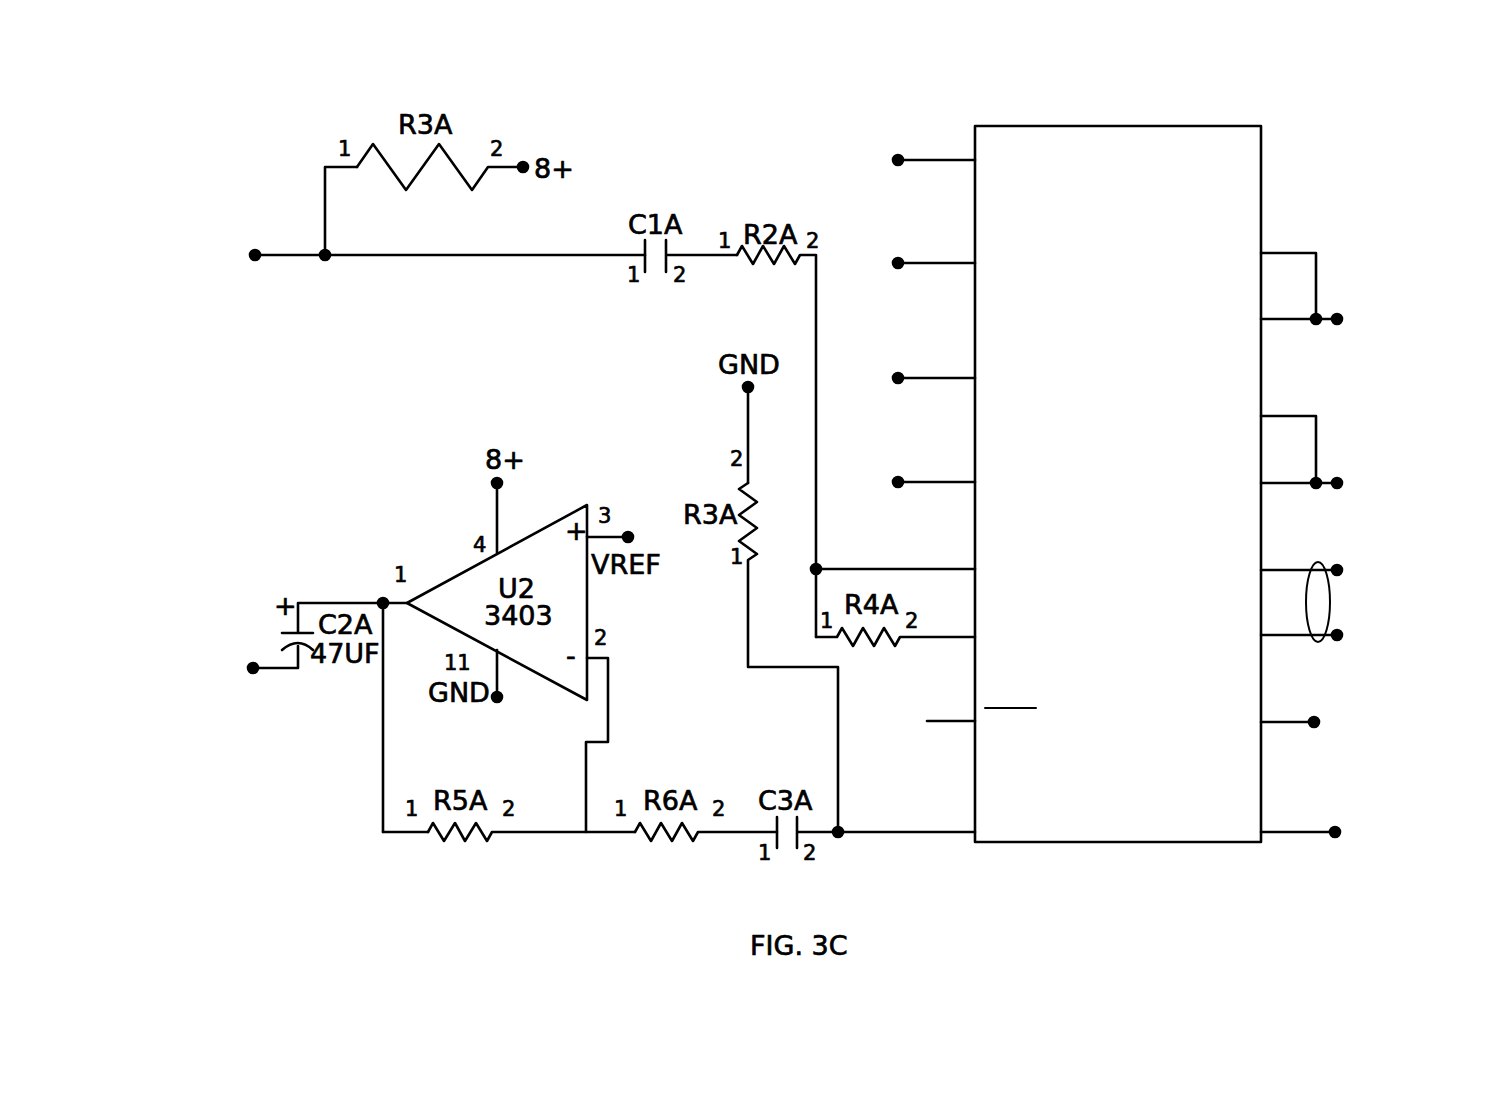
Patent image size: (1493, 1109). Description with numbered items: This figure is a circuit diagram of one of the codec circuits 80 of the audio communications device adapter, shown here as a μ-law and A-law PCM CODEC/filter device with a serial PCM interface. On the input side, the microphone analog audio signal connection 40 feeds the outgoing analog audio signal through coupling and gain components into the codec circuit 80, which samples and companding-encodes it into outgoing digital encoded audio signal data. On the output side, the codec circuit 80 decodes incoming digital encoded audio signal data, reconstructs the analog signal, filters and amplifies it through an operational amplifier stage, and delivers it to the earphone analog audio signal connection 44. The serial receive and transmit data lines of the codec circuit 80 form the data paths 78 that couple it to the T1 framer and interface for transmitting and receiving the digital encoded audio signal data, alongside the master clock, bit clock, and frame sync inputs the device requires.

The microphone analog audio signal connection 40 is at (255, 255).
The earphone analog audio signal connection 44 is at (253, 668).
The data path 78 is at (1330, 600).
The codec circuit 80 is at (1113, 842).